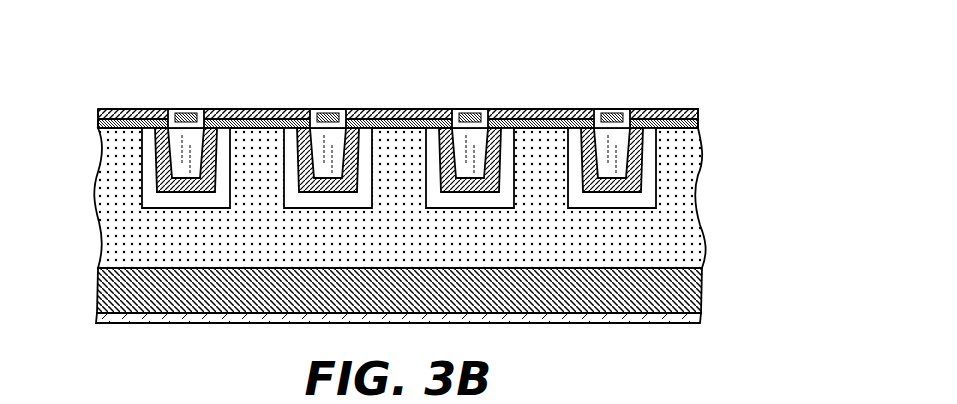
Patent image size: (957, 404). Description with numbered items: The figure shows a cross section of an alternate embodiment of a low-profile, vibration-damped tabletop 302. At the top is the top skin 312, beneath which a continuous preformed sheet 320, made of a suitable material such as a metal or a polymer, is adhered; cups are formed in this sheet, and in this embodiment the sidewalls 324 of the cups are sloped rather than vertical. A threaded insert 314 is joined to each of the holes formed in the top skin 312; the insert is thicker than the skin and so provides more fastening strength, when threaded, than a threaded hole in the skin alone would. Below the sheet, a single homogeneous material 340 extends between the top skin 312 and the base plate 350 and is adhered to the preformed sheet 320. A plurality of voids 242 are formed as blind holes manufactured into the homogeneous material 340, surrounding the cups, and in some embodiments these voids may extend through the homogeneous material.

The low-profile, vibration-damped tabletop 302 is at (688, 39).
The top skin 312 is at (152, 108).
The threaded insert 314 is at (338, 106).
The preformed sheet 320 is at (700, 124).
The sidewalls 324 is at (500, 160).
The voids 242 is at (148, 175).
The homogeneous material 340 is at (690, 218).
The base plate 350 is at (708, 293).